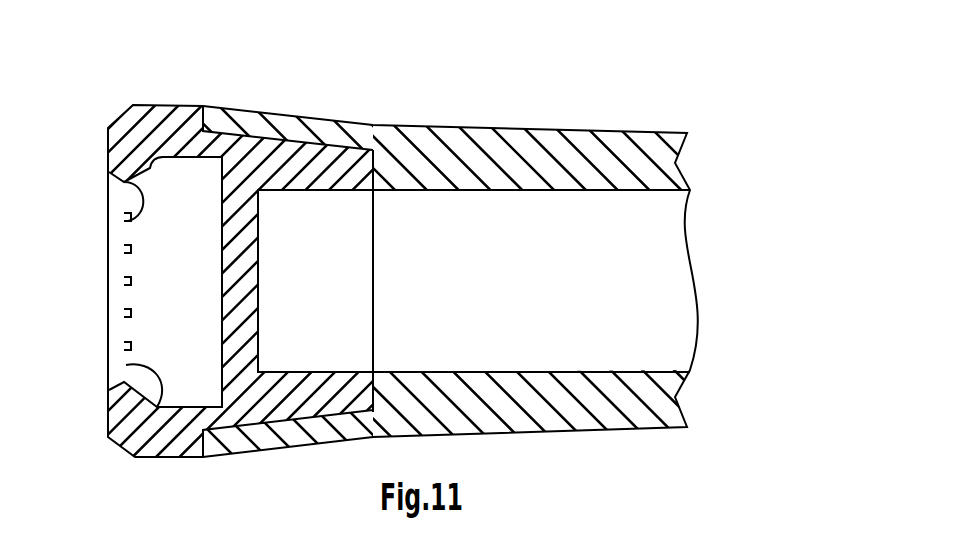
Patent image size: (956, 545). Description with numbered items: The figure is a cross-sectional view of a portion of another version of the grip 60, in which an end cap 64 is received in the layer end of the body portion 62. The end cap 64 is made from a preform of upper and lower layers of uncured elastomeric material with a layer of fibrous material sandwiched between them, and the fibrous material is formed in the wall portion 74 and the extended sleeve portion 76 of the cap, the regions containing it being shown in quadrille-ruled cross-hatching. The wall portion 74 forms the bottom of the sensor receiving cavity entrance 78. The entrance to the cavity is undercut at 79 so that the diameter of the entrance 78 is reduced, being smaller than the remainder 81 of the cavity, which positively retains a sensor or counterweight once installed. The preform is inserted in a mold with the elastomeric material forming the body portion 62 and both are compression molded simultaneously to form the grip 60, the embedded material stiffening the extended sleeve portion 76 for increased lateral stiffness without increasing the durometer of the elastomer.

The grip 60 is at (377, 267).
The body portion 62 is at (450, 250).
The end cap 64 is at (117, 103).
The wall portion 74 is at (258, 290).
The extended sleeve portion 76 is at (305, 140).
The sensor receiving cavity entrance 78 is at (130, 221).
The undercut 79 is at (126, 365).
The remainder of the cavity 81 is at (187, 405).